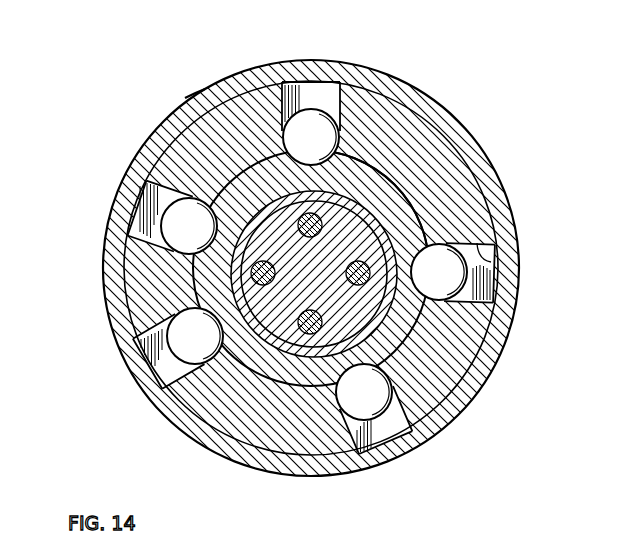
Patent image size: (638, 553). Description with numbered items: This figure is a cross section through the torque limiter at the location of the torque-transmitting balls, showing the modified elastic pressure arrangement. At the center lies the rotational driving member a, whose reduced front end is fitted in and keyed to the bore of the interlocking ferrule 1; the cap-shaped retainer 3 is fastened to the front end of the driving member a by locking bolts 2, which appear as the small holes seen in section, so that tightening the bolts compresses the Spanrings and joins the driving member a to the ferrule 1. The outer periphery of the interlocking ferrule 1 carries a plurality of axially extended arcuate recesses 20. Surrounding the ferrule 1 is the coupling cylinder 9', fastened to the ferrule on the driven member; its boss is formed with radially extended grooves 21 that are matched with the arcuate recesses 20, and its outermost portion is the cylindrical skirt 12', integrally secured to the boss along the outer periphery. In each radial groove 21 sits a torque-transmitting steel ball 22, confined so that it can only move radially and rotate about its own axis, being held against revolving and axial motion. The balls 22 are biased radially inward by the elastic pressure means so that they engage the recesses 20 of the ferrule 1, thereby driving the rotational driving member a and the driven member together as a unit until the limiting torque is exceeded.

The interlocking ferrule 1 is at (388, 199).
The locking bolts 2 is at (320, 213).
The retainer 3 is at (452, 192).
The coupling cylinder 9' is at (425, 191).
The cylindrical skirt 12' is at (338, 268).
The arcuate recesses 20 is at (266, 106).
The radial grooves 21 is at (283, 83).
The torque-transmitting steel ball 22 is at (311, 130).
The rotational driving member a is at (191, 105).